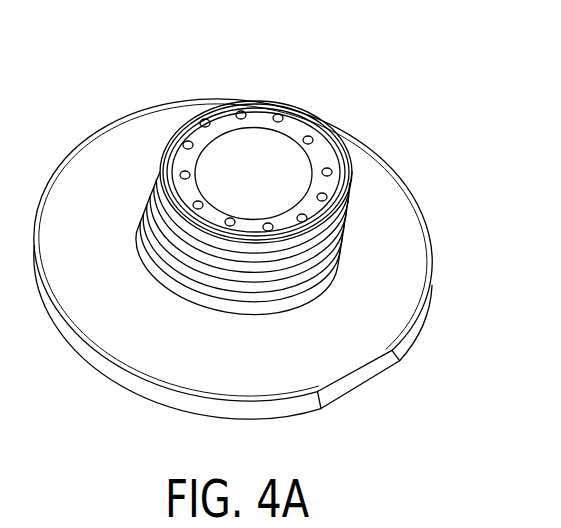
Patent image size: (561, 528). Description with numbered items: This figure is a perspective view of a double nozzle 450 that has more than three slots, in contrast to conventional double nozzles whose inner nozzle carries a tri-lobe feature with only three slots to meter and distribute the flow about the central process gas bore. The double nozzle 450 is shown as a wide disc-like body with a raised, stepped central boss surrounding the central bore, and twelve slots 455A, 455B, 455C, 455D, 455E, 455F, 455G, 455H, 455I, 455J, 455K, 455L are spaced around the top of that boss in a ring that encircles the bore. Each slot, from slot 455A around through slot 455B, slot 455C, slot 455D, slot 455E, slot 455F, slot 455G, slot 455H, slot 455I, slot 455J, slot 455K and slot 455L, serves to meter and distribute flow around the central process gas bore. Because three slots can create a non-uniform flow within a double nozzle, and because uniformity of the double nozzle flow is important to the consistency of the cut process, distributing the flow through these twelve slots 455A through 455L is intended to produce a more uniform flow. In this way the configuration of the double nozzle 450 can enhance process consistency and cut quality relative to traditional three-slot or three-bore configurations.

The double nozzle 450 is at (403, 190).
The slot 455A is at (283, 114).
The slot 455B is at (313, 137).
The slot 455C is at (333, 174).
The slot 455D is at (326, 203).
The slot 455E is at (304, 224).
The slot 455F is at (266, 233).
The slot 455G is at (228, 228).
The slot 455H is at (194, 211).
The slot 455I is at (182, 181).
The slot 455J is at (185, 148).
The slot 455K is at (202, 119).
The slot 455L is at (239, 110).